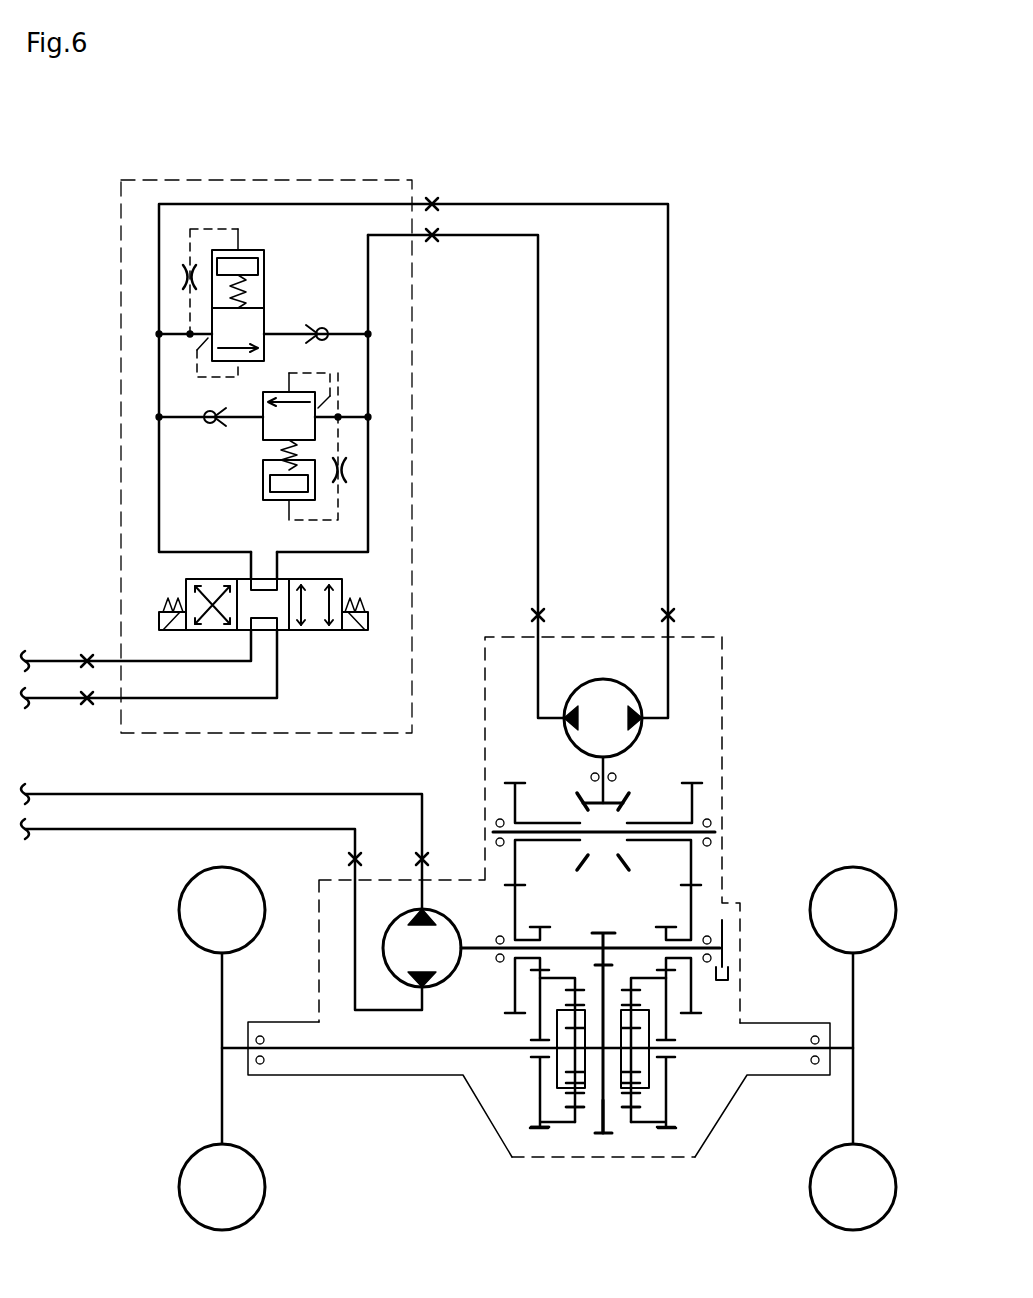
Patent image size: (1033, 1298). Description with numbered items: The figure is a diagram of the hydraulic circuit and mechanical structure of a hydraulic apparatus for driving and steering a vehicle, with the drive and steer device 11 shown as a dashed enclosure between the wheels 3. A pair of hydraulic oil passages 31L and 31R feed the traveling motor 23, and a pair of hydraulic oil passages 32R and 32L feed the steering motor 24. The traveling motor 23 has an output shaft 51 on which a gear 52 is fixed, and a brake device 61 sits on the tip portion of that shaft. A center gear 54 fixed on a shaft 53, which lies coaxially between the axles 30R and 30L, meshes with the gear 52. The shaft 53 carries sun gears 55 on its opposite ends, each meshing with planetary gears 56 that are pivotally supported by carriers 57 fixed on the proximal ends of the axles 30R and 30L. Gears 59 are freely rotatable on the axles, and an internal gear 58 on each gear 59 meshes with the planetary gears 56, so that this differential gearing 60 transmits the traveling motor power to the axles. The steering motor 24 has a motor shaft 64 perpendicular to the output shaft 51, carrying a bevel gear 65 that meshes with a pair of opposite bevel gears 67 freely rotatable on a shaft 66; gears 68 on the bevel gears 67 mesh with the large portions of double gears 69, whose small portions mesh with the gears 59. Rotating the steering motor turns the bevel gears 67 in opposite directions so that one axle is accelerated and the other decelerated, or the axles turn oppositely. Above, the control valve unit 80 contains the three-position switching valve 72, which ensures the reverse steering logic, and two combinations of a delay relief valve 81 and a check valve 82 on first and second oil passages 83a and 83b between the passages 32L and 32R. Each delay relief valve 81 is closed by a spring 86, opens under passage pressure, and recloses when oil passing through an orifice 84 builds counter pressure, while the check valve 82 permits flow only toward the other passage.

The wheel 3 is at (852, 866).
The drive and steer device 11 is at (724, 656).
The traveling motor 23 is at (398, 914).
The steering motor 24 is at (586, 702).
The axle 30R is at (352, 1050).
The axle 30L is at (770, 1050).
The hydraulic oil passage 31L is at (108, 794).
The hydraulic oil passage 31R is at (104, 830).
The hydraulic oil passage 32R is at (538, 347).
The hydraulic oil passage 32L is at (668, 318).
The output shaft 51 is at (478, 947).
The gear 52 is at (606, 942).
The shaft 53 is at (608, 1135).
The center gear 54 is at (600, 965).
The sun gear 55 is at (565, 1040).
The planetary gear 56 is at (565, 1080).
The carrier 57 is at (538, 1005).
The internal gear 58 is at (565, 1125).
The gear 59 is at (528, 1115).
The differential gearing 60 is at (530, 1137).
The brake device 61 is at (742, 939).
The motor shaft 64 is at (610, 770).
The bevel gear 65 is at (588, 803).
The shaft 66 is at (657, 836).
The bevel gear 67 is at (580, 810).
The gear 68 is at (507, 792).
The double gear 69 is at (518, 912).
The switching valve 72 is at (342, 584).
The control valve unit 80 is at (165, 180).
The delay relief valve 81 is at (266, 330).
The check valve 82 is at (320, 326).
The oil passage 83a is at (178, 417).
The oil passage 83b is at (340, 334).
The orifice 84 is at (180, 277).
The spring 86 is at (225, 290).